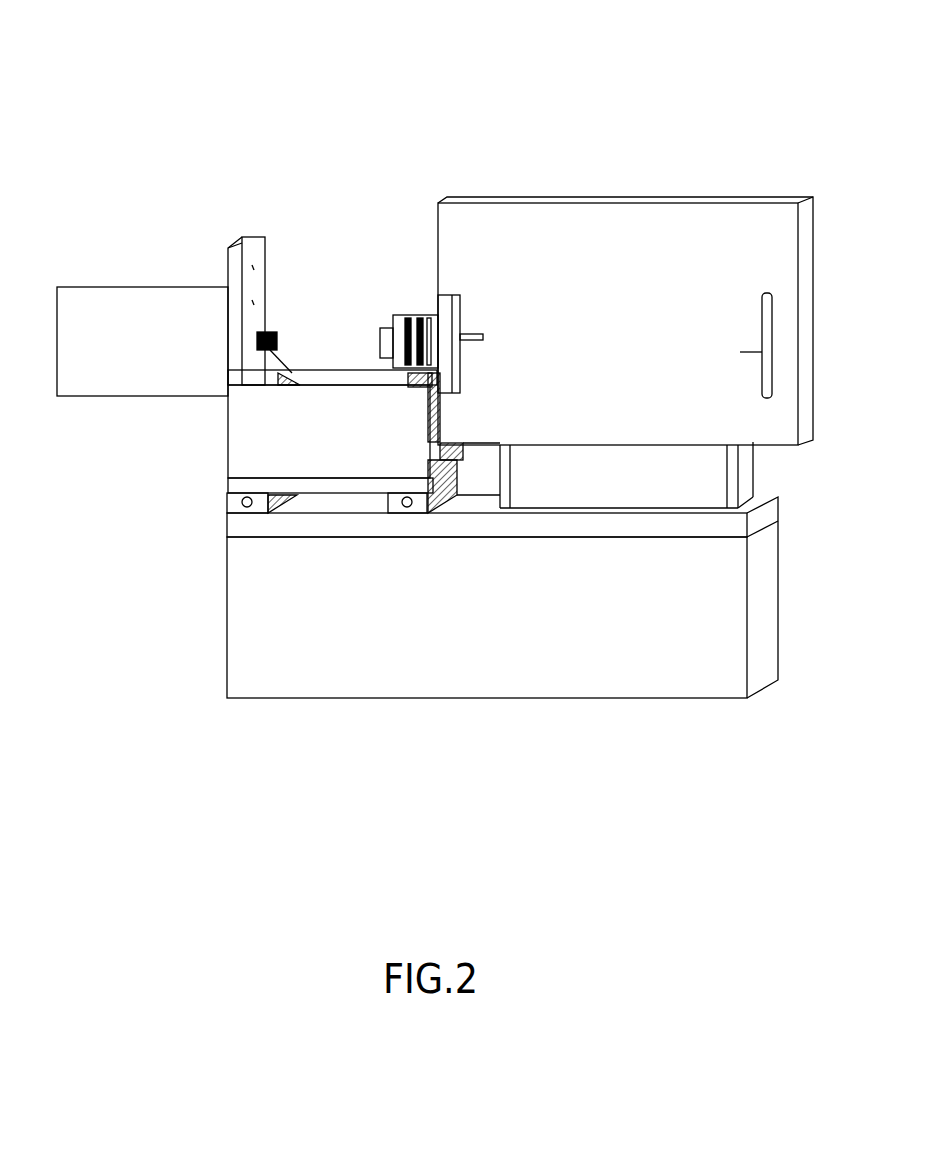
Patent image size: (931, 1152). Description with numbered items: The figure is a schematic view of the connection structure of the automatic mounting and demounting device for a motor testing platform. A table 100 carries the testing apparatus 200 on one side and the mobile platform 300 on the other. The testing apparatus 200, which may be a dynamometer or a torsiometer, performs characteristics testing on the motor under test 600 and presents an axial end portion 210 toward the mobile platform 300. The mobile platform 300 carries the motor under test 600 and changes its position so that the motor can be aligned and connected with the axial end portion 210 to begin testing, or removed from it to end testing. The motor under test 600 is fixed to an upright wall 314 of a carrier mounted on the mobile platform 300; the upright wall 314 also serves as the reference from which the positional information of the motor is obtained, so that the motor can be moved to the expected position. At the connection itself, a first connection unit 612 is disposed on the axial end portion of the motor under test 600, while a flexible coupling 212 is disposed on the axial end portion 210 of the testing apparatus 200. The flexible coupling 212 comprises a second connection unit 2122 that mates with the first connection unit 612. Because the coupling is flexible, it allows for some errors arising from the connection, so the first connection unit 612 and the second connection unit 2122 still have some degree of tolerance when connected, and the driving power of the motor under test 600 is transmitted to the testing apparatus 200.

The table 100 is at (450, 678).
The testing apparatus 200 is at (653, 197).
The axial end portion 210 is at (452, 63).
The flexible coupling 212 is at (408, 293).
The second connection unit 2122 is at (380, 328).
The mobile platform 300 is at (185, 435).
The upright wall 314 is at (245, 245).
The motor under test 600 is at (108, 305).
The first connection unit 612 is at (270, 332).